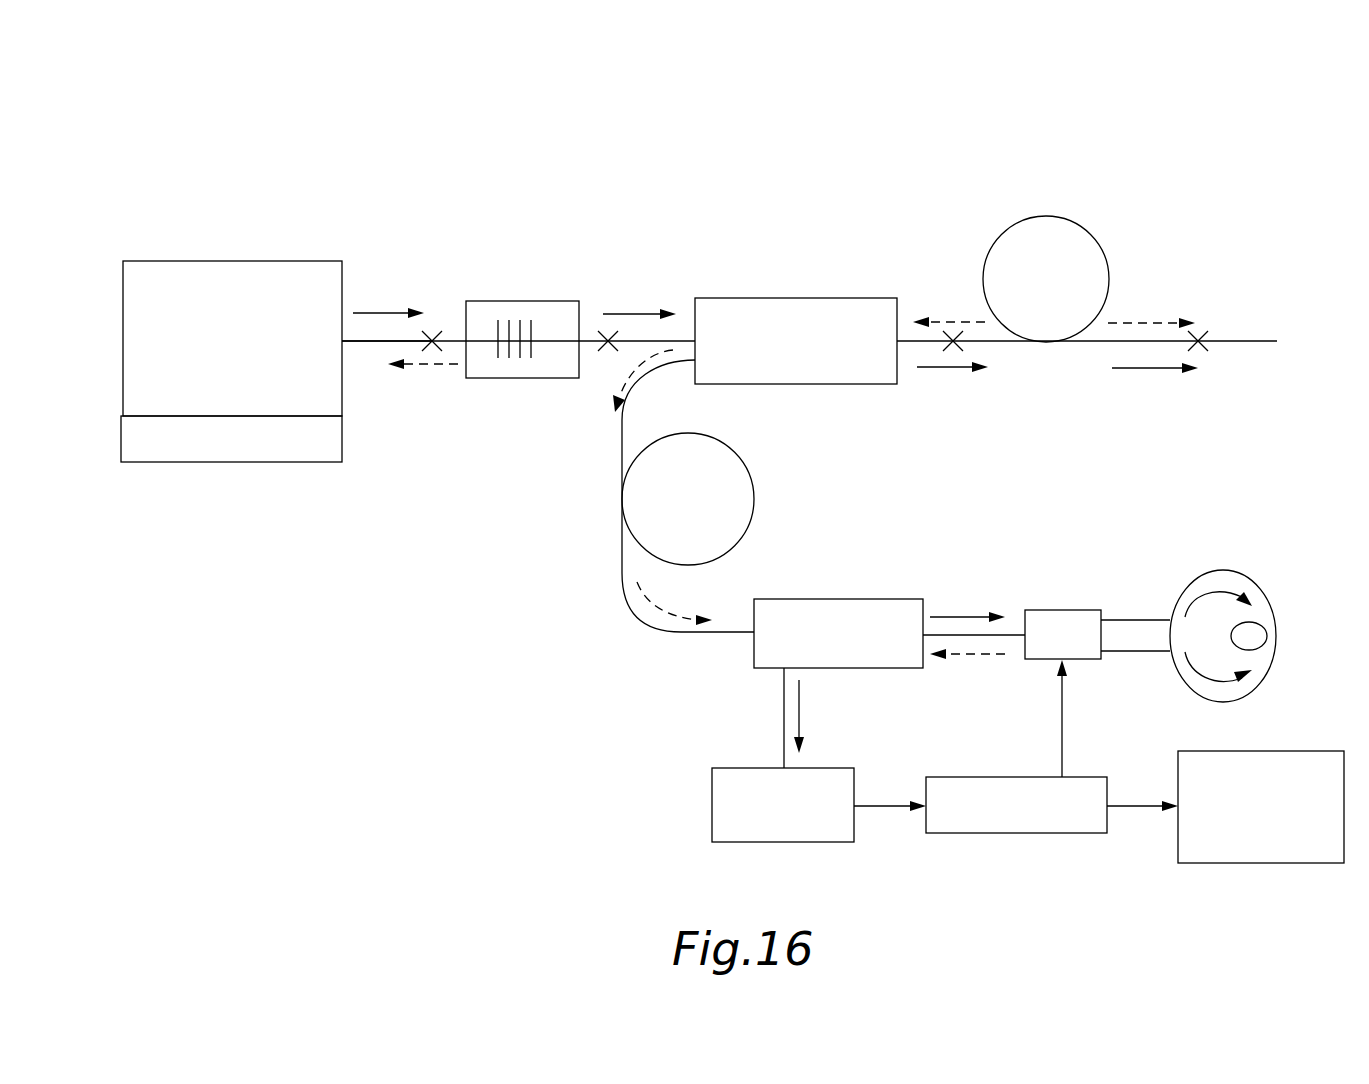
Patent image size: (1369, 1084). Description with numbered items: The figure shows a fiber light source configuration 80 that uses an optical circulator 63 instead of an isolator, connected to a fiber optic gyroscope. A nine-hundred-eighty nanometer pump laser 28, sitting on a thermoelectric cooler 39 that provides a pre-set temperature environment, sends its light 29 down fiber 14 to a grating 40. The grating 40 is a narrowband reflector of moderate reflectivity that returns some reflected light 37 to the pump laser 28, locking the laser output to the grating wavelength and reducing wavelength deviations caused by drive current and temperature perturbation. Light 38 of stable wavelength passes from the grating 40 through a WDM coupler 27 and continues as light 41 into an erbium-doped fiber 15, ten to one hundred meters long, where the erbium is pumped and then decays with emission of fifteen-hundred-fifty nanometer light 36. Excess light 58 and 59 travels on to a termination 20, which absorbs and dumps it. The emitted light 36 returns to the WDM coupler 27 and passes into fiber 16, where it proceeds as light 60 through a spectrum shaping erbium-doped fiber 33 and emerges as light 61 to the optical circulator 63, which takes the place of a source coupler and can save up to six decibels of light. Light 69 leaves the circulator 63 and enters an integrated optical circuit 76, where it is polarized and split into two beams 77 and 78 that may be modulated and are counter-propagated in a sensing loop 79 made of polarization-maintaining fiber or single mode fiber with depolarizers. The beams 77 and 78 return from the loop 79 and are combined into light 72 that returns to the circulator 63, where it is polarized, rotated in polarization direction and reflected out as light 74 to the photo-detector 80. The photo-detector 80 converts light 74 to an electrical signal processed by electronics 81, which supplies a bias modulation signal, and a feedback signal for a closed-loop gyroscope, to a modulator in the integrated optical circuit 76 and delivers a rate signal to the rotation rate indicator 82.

The fiber 14 is at (358, 343).
The erbium-doped fiber 15 is at (992, 246).
The fiber 16 is at (660, 372).
The termination 20 is at (1210, 348).
The 980/1550 nm WDM coupler 27 is at (765, 298).
The 980 nm pump laser 28 is at (192, 261).
The pump light 29 is at (384, 312).
The spectrum shaping erbium-doped fiber 33 is at (753, 503).
The 1550 nm light 36 is at (950, 322).
The reflected light 37 is at (420, 365).
The light 38 is at (637, 313).
The thermoelectric cooler (TEC) 39 is at (198, 462).
The grating 40 is at (520, 378).
The light 41 is at (940, 368).
The excess light 58 is at (1140, 323).
The excess light 59 is at (1120, 369).
The light 60 is at (636, 367).
The light 61 is at (660, 612).
The optical circulator 63 is at (845, 599).
The light 69 is at (952, 617).
The light 72 is at (975, 655).
The light 74 is at (800, 700).
The integrated optical circuit 76 is at (1060, 610).
The beam 77 is at (1208, 604).
The beam 78 is at (1202, 674).
The sensing loop 79 is at (1263, 590).
The fiber light source configuration / photo-detector 80 is at (1160, 230).
The electronics 81 is at (1082, 777).
The rotation rate indicator 82 is at (1256, 751).